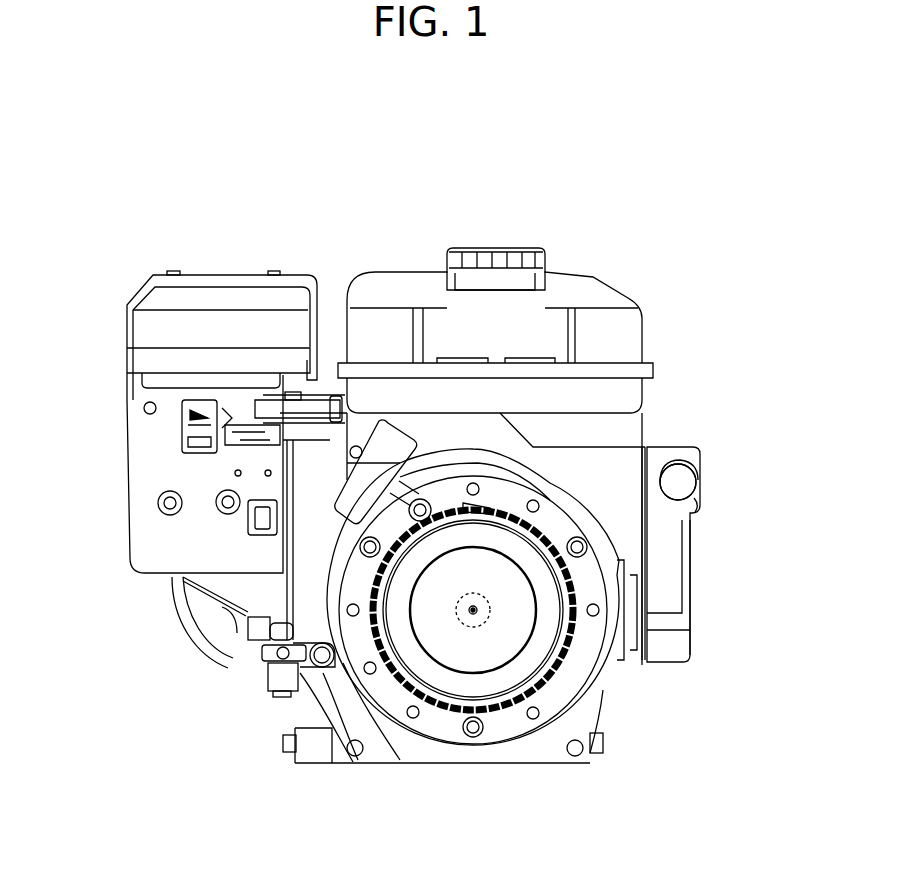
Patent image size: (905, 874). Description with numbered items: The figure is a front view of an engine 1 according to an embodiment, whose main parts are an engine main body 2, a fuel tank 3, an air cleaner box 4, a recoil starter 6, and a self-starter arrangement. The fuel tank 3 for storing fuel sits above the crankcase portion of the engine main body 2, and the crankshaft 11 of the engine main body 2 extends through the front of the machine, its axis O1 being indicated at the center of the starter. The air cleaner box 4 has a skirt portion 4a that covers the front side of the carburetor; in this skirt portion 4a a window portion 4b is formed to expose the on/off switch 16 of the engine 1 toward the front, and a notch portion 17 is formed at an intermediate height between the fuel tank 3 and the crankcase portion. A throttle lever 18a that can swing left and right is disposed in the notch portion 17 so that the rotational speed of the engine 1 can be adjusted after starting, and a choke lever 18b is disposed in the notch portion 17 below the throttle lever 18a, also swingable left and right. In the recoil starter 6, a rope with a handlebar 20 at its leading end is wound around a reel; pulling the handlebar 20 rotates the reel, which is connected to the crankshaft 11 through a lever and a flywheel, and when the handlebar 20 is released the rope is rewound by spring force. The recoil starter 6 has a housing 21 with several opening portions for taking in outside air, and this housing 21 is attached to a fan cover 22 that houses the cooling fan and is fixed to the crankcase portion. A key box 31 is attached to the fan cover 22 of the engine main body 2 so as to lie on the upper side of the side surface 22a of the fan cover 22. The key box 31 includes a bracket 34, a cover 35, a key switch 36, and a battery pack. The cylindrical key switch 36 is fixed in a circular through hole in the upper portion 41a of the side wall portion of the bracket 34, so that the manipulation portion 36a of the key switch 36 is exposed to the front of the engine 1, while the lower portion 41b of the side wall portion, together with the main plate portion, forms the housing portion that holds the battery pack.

The engine 1 is at (607, 168).
The engine main body 2 is at (626, 430).
The fuel tank 3 is at (388, 283).
The air cleaner box 4 is at (220, 297).
The skirt portion 4a is at (147, 447).
The window portion 4b is at (266, 540).
The recoil starter 6 is at (510, 640).
The crankshaft 11 is at (473, 612).
The on/off switch 16 is at (250, 520).
The notch portion 17 is at (223, 413).
The throttle lever 18a is at (330, 412).
The choke lever 18b is at (253, 442).
The handlebar 20 is at (392, 440).
The housing 21 is at (553, 588).
The fan cover 22 is at (608, 660).
The side surface 22a is at (637, 605).
The key box 31 is at (665, 445).
The bracket 34 is at (665, 527).
The cover 35 is at (672, 640).
The key switch 36 is at (678, 482).
The manipulation portion 36a is at (685, 478).
The upper portion 41a is at (693, 497).
The lower portion 41b is at (672, 574).
The crankshaft axis O1 is at (473, 612).